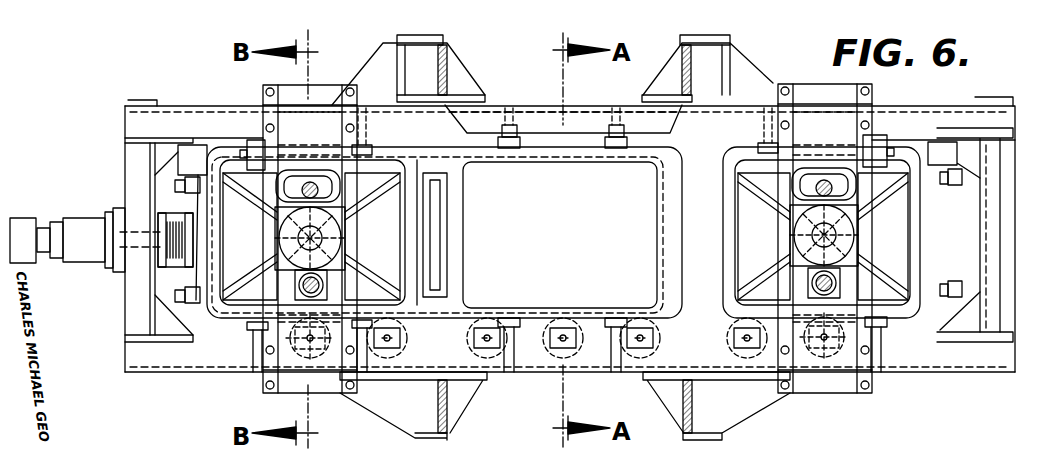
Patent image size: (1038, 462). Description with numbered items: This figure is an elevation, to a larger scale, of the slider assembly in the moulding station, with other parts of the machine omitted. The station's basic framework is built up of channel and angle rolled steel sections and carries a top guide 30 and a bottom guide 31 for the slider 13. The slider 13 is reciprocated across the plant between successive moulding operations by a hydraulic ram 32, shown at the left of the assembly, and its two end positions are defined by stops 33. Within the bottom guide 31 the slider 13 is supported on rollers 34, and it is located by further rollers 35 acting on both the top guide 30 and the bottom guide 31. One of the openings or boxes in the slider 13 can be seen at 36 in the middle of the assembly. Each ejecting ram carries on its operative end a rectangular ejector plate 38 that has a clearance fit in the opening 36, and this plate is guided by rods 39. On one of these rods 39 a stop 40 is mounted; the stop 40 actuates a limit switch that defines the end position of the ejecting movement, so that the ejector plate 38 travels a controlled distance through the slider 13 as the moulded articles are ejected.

The slider 13 is at (670, 207).
The top guide 30 is at (140, 118).
The bottom guide 31 is at (155, 360).
The hydraulic ram 32 is at (100, 258).
The stops 33 is at (198, 178).
The rollers 34 is at (467, 330).
The rollers 35 is at (363, 146).
The opening 36 is at (515, 239).
The ejector plate 38 is at (258, 230).
The rods 39 is at (322, 290).
The stop 40 is at (290, 183).